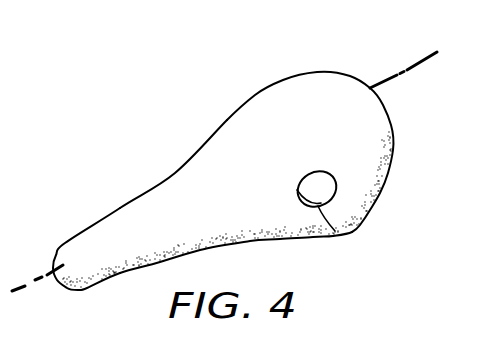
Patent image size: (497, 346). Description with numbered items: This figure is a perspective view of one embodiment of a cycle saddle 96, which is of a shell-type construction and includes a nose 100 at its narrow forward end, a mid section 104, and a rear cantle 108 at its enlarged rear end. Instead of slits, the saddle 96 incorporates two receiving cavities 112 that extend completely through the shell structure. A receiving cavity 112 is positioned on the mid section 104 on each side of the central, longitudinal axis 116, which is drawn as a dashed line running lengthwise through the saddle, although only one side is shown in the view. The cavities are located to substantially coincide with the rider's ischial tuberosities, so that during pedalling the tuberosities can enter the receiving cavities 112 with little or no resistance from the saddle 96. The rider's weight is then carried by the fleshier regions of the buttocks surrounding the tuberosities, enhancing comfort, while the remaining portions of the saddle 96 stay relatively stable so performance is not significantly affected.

The saddle 96 is at (167, 177).
The nose 100 is at (73, 258).
The mid section 104 is at (245, 148).
The rear cantle 108 is at (376, 114).
The receiving cavity 112 is at (333, 229).
The central, longitudinal axis 116 is at (402, 71).